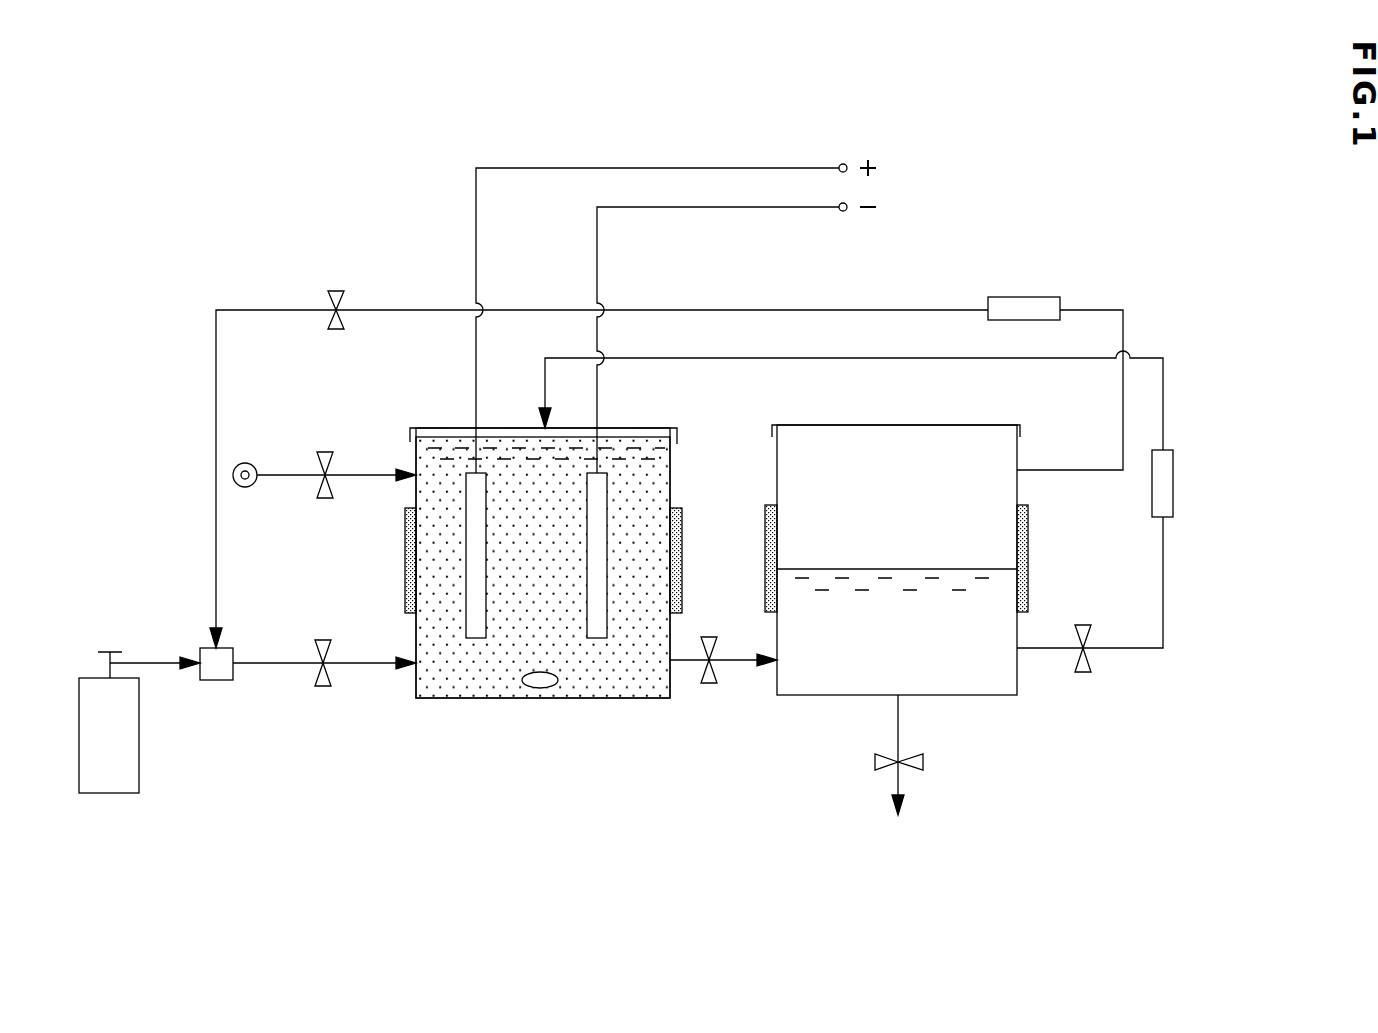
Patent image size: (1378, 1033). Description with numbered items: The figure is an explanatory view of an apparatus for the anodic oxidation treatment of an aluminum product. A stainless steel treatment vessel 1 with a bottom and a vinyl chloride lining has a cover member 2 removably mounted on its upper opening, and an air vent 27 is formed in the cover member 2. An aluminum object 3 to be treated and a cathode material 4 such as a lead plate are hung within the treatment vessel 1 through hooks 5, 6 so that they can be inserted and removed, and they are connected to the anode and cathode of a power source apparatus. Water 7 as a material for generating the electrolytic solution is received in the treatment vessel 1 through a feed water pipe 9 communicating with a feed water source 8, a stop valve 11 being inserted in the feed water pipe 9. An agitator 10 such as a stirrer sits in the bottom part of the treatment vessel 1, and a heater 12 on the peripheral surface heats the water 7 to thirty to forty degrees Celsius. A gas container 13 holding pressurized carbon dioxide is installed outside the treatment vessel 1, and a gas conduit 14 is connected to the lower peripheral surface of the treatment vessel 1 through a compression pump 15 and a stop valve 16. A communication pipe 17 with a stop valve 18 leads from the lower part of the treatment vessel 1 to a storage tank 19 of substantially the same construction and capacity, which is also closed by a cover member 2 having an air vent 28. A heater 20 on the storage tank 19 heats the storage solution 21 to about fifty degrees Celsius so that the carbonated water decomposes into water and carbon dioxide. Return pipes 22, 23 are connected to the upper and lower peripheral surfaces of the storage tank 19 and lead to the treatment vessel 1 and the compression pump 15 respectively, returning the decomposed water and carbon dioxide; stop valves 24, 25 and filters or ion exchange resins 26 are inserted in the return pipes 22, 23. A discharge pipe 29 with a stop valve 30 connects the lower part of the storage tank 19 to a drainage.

The treatment vessel 1 is at (566, 593).
The cover member 2 is at (563, 426).
The object to be treated 3 is at (487, 568).
The cathode material 4 is at (586, 568).
The hook 5 is at (474, 448).
The hook 6 is at (597, 450).
The water 7 is at (465, 692).
The feed water source 8 is at (245, 462).
The feed water pipe 9 is at (283, 473).
The agitator 10 is at (540, 683).
The stop valve 11 is at (325, 452).
The heater 12 is at (405, 565).
The gas container 13 is at (130, 750).
The gas conduit 14 is at (279, 662).
The compression pump 15 is at (221, 680).
The stop valve 16 is at (325, 686).
The communication pipe 17 is at (733, 657).
The stop valve 18 is at (707, 683).
The storage tank 19 is at (897, 565).
The heater 20 is at (1028, 546).
The storage solution 21 is at (825, 685).
The return pipe 22 is at (1165, 600).
The return pipe 23 is at (850, 305).
The stop valve 24 is at (1083, 673).
The stop valve 25 is at (336, 290).
The filter or ion exchange resin 26 is at (1023, 300).
The air vent 27 is at (423, 427).
The air vent 28 is at (888, 424).
The discharge pipe 29 is at (900, 725).
The stop valve 30 is at (923, 762).